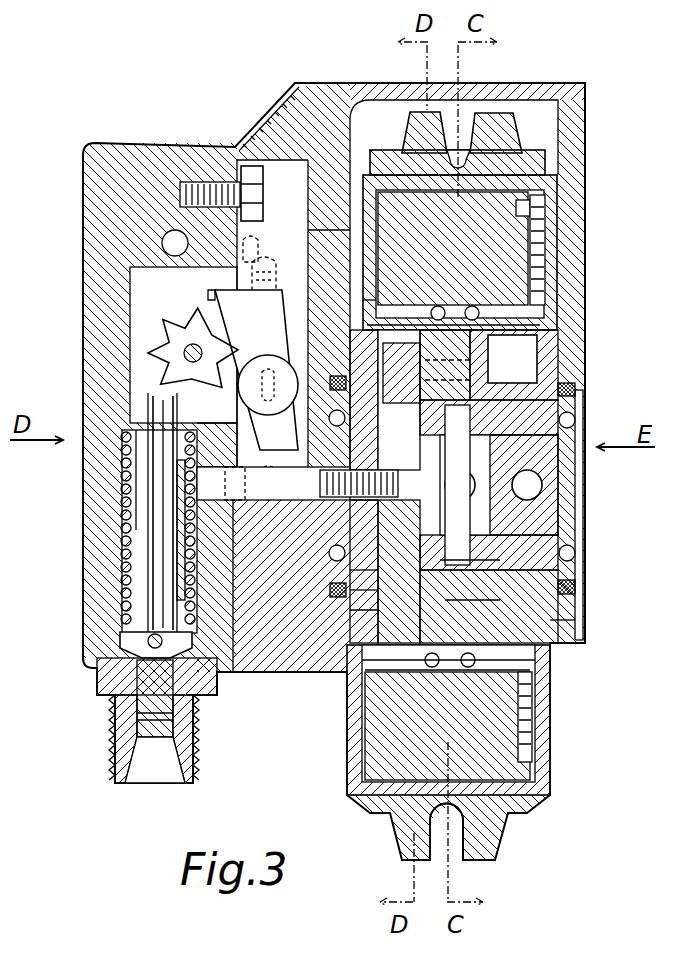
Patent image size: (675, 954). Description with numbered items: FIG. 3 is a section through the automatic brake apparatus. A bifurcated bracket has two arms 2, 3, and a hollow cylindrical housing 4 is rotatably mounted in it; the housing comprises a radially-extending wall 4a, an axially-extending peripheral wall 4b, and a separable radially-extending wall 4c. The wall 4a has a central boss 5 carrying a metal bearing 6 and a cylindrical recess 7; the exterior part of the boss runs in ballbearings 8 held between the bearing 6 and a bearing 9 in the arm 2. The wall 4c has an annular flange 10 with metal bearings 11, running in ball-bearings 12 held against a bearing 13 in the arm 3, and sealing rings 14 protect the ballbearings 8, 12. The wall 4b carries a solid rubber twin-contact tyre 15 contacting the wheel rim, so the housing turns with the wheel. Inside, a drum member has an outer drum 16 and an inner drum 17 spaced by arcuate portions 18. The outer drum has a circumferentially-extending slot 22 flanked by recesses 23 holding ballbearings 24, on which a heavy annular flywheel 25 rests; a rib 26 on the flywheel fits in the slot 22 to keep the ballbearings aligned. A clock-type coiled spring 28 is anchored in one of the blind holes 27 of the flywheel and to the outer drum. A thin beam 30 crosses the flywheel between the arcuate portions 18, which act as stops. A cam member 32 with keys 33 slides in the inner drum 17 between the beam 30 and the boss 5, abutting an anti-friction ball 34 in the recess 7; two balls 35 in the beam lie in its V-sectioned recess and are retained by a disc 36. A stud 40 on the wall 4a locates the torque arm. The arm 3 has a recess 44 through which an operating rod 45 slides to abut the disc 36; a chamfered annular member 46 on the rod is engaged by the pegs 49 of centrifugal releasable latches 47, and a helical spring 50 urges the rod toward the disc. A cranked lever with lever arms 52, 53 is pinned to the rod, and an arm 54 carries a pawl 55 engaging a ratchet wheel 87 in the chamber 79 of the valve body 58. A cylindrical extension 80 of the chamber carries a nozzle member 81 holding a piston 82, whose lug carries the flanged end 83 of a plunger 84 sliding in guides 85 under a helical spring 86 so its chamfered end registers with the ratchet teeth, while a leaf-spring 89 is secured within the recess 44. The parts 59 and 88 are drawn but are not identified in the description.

The arm 2 is at (570, 118).
The arm 3 is at (320, 213).
The hollow cylindrical housing 4 is at (565, 180).
The radially-extending wall 4a is at (560, 207).
The axially-extending peripheral wall 4b is at (520, 148).
The separable radially-extending wall 4c is at (308, 230).
The boss 5 is at (563, 490).
The metal bearing 6 is at (578, 460).
The cylindrical recess 7 is at (503, 520).
The ballbearings 8 is at (575, 419).
The bearing 9 is at (578, 391).
The annular flange 10 is at (325, 513).
The metal bearings 11 is at (340, 542).
The ball-bearings 12 is at (338, 568).
The bearing 13 is at (335, 590).
The sealing rings 14 is at (335, 607).
The solid rubber twin-contact tyre 15 is at (432, 848).
The outer drum 16 is at (375, 307).
The inner drum 17 is at (563, 620).
The arcuate portions 18 is at (513, 630).
The circumferentially-extending slot 22 is at (530, 653).
The circumferentially-extending recess 23 is at (372, 670).
The ballbearings 24 is at (470, 306).
The annular flywheel 25 is at (377, 735).
The radially-extending rib 26 is at (512, 707).
The blind holes 27 is at (517, 210).
The clock-type coiled spring 28 is at (540, 267).
The thin beam 30 is at (455, 505).
The cam member 32 is at (575, 555).
The keys 33 is at (578, 585).
The anti-friction ball 34 is at (540, 492).
The balls 35 is at (475, 485).
The disc 36 is at (448, 522).
The stud 40 is at (522, 362).
The recess 44 is at (297, 193).
The operating rod 45 is at (135, 528).
The annular member 46 is at (447, 467).
The centrifugal releasable latches 47 is at (390, 368).
The peg 49 is at (427, 450).
The helical spring 50 is at (283, 443).
The lever arm 52 is at (330, 465).
The lever arm 53 is at (260, 290).
The arm 54 is at (277, 320).
The pawl 55 is at (217, 293).
The valve body 58 is at (138, 148).
The rod 59 is at (207, 488).
The chamber 79 is at (223, 420).
The cylindrical extension 80 is at (230, 497).
The nozzle member 81 is at (177, 747).
The piston 82 is at (167, 702).
The flanged end 83 is at (127, 640).
The plunger 84 is at (157, 418).
The guides 85 is at (175, 507).
The helical spring 86 is at (123, 463).
The ratchet wheel 87 is at (147, 345).
The pin 88 is at (184, 353).
The leaf-spring 89 is at (259, 243).